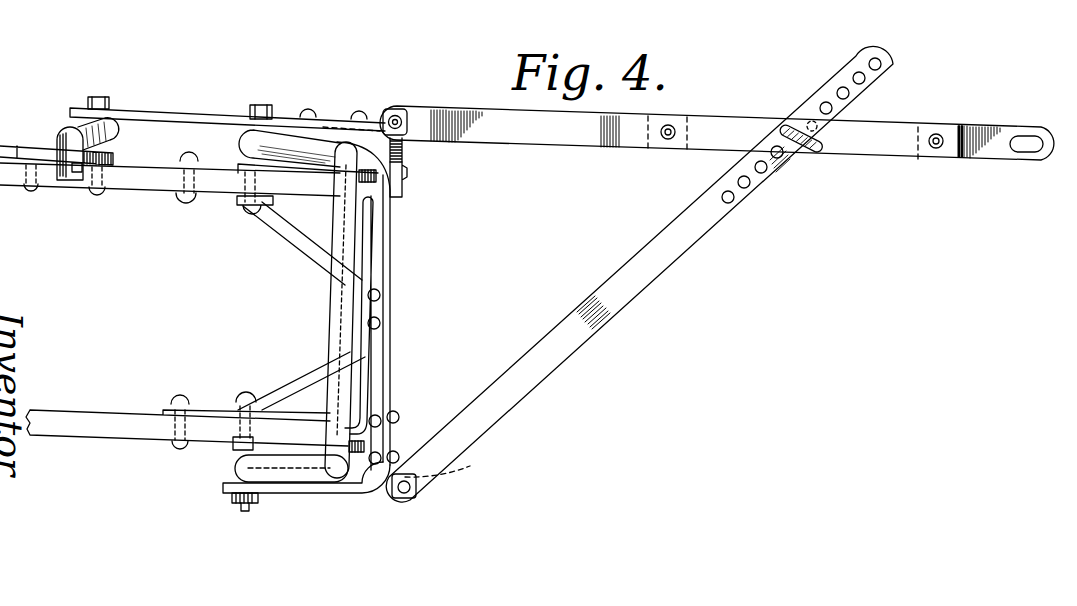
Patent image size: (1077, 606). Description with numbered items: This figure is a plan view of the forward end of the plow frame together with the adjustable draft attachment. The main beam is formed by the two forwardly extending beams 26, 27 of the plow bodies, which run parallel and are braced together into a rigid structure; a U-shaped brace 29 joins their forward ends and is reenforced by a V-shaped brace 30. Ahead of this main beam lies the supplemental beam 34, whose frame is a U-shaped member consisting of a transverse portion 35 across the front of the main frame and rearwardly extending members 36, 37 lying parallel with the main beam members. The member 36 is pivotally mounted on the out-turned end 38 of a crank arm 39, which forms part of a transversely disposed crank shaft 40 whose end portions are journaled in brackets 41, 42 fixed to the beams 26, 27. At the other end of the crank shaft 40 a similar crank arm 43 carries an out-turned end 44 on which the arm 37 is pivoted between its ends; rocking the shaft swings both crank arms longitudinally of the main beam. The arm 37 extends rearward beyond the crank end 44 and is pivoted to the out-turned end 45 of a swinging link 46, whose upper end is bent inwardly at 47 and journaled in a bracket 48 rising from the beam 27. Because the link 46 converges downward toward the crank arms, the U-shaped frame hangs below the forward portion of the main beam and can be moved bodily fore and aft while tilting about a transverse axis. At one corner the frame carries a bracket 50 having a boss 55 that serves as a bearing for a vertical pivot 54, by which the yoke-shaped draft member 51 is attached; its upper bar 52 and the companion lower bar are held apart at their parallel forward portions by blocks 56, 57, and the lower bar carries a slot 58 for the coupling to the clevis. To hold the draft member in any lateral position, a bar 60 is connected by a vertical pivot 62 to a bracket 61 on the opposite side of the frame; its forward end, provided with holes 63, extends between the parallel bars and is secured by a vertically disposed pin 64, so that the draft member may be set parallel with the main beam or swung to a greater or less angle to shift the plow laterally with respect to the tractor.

The beam 26 is at (108, 423).
The beam 27 is at (128, 193).
The U-shaped brace 29 is at (374, 251).
The V-shaped brace 30 is at (335, 256).
The supplemental beam 34 is at (596, 158).
The transverse portion 35 is at (391, 278).
The rearwardly extending member 36 is at (277, 492).
The rearwardly extending member 37 is at (201, 112).
The out-turned end 38 is at (243, 495).
The crank arm 39 is at (240, 468).
The crank shaft 40 is at (352, 372).
The bracket 41 is at (393, 440).
The bracket 42 is at (403, 182).
The crank arm 43 is at (307, 148).
The out-turned end 44 is at (272, 105).
The out-turned end 45 is at (109, 101).
The swinging link 46 is at (106, 137).
The inwardly bent upper end 47 is at (62, 172).
The bracket 48 is at (17, 147).
The bracket 50 is at (403, 151).
The draft member 51 is at (957, 114).
The upper bar 52 is at (510, 135).
The vertical pivot 54 is at (407, 110).
The boss 55 is at (400, 116).
The block 56 is at (690, 124).
The block 57 is at (917, 133).
The slot 58 is at (1013, 136).
The bar 60 is at (647, 247).
The bracket 61 is at (390, 438).
The vertical pivot 62 is at (416, 496).
The holes 63 is at (718, 197).
The pin 64 is at (814, 142).